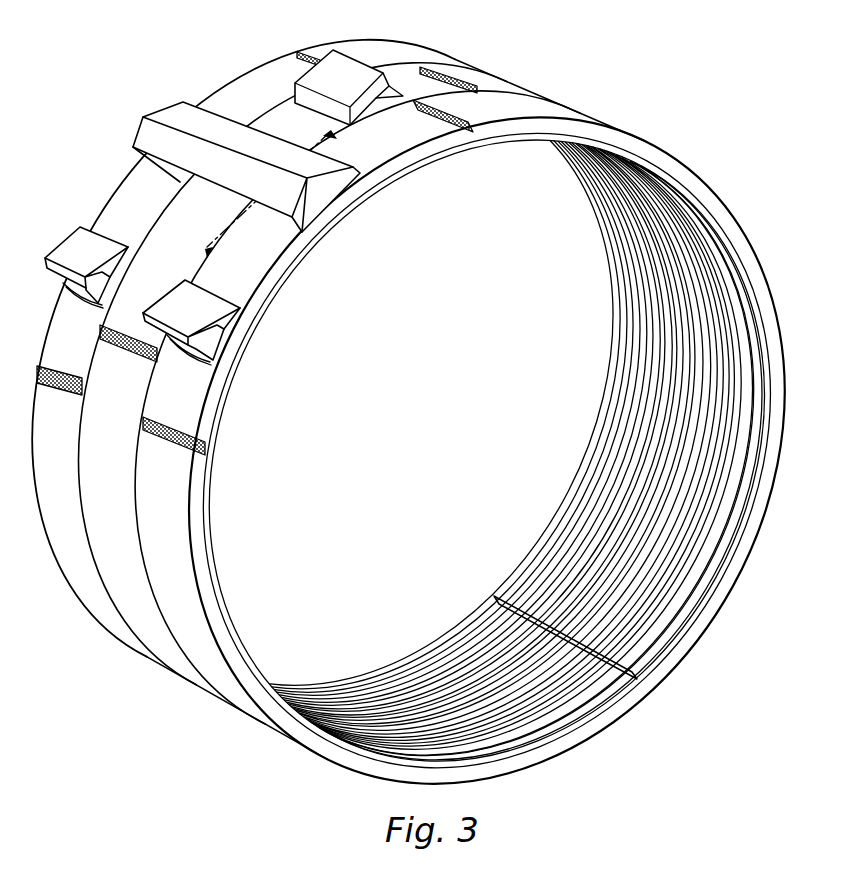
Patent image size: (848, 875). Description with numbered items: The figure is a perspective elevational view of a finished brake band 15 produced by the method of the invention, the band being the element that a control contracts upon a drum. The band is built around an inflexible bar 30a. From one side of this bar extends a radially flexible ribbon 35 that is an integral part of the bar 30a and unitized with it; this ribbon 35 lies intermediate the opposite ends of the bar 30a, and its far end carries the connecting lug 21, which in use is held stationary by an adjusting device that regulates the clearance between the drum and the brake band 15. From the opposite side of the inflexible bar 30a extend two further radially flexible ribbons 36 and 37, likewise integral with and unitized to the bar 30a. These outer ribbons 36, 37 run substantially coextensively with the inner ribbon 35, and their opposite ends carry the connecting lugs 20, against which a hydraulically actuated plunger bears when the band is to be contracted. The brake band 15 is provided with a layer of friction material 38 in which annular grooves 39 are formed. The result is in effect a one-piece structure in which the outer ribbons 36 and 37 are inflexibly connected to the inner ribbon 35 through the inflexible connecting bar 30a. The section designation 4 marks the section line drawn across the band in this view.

The brake band 15 is at (573, 117).
The connecting lugs 20 is at (65, 255).
The connecting lug 21 is at (327, 67).
The inflexible bar 30a is at (165, 115).
The radially flexible ribbon 35 is at (418, 78).
The radially flexible ribbon 36 is at (267, 77).
The radially flexible ribbon 37 is at (416, 130).
The layer of friction material 38 is at (597, 690).
The annular grooves 39 is at (554, 544).
The section line 4- 4 is at (333, 131).